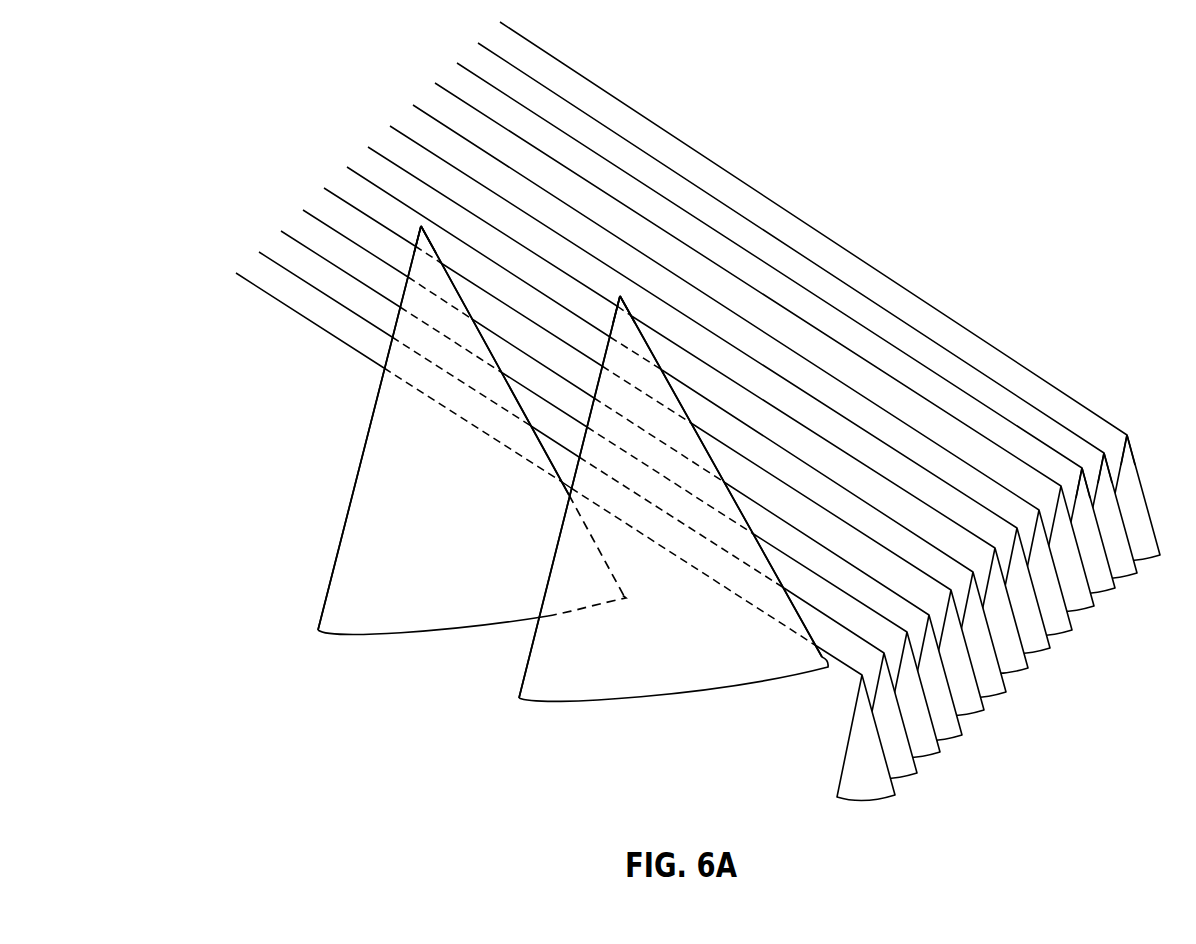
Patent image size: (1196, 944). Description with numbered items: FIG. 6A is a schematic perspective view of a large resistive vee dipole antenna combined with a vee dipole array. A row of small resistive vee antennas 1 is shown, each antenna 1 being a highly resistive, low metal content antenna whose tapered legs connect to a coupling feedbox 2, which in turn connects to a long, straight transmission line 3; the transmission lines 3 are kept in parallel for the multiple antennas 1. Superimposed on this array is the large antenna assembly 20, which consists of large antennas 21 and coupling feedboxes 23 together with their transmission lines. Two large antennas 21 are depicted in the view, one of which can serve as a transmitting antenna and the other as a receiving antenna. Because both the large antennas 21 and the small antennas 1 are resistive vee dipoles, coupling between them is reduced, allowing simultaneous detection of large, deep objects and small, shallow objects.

The resistive vee antenna 1 is at (1147, 562).
The coupling feedbox 2 is at (1127, 435).
The transmission line 3 is at (869, 259).
The large antenna assembly 20 is at (568, 637).
The large antenna 21 is at (822, 657).
The coupling feedbox 23 is at (620, 296).